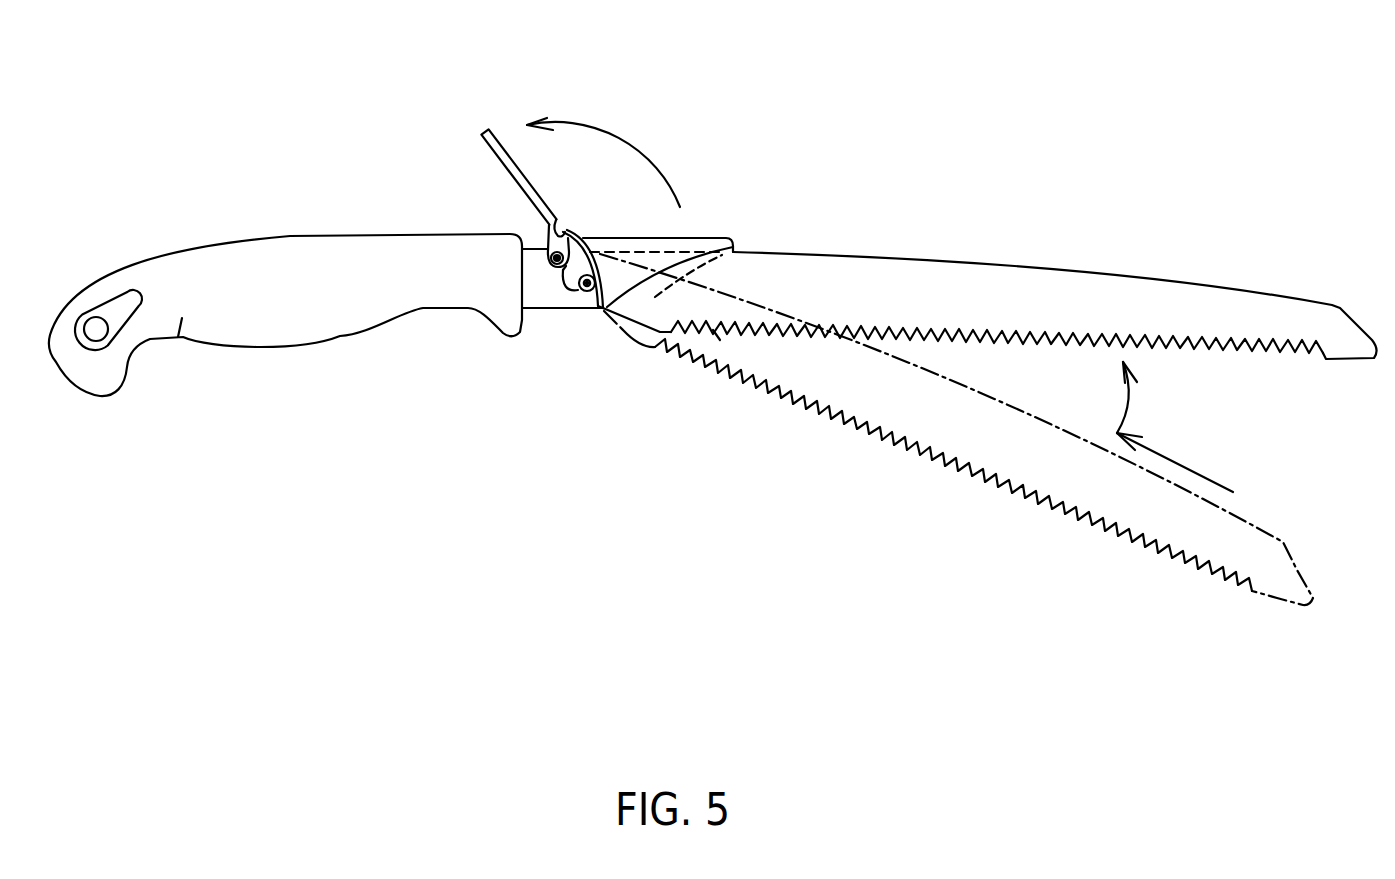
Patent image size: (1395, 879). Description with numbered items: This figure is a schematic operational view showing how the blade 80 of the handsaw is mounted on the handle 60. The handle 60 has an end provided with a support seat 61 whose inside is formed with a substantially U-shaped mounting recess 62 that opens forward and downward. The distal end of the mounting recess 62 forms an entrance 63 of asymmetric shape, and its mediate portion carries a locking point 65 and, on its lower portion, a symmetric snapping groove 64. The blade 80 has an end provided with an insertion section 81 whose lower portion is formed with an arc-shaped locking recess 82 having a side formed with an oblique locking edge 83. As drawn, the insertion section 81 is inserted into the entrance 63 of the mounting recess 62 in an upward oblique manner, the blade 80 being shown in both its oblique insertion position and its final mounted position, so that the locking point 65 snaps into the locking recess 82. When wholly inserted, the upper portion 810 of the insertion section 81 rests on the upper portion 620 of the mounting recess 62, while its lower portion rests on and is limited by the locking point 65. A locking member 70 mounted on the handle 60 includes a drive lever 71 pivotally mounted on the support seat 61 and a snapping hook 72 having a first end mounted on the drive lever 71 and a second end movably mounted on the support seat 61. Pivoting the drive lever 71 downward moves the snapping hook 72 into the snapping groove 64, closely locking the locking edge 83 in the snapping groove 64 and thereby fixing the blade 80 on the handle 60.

The handle 60 is at (286, 235).
The support seat 61 is at (722, 240).
The mounting recess 62 is at (720, 236).
The entrance 63 is at (713, 330).
The snapping groove 64 is at (588, 308).
The locking point 65 is at (582, 290).
The locking member 70 is at (514, 173).
The drive lever 71 is at (507, 163).
The snapping hook 72 is at (584, 243).
The blade 80 is at (1165, 281).
The insertion section 81 is at (683, 218).
The locking recess 82 is at (557, 335).
The locking edge 83 is at (616, 376).
The upper portion of the insertion section 810 is at (587, 251).
The upper portion of the mounting recess 620 is at (526, 336).